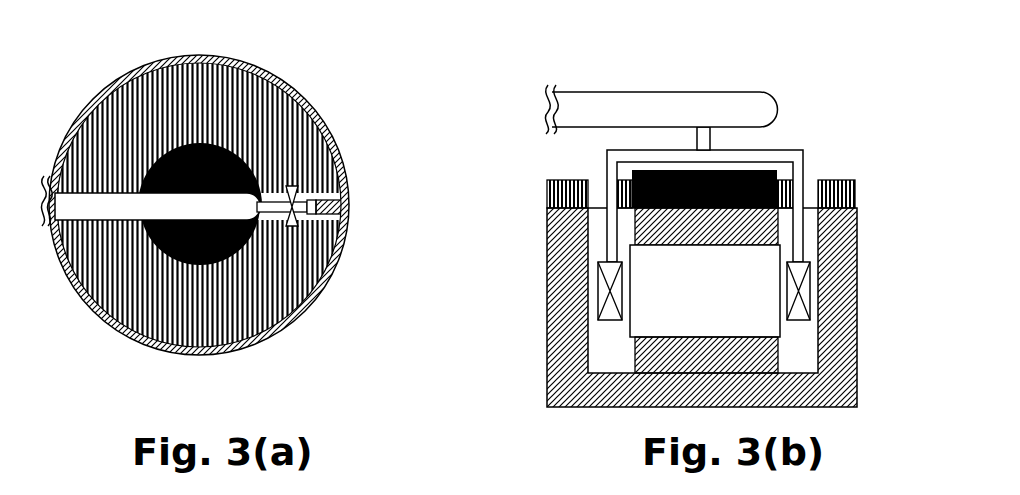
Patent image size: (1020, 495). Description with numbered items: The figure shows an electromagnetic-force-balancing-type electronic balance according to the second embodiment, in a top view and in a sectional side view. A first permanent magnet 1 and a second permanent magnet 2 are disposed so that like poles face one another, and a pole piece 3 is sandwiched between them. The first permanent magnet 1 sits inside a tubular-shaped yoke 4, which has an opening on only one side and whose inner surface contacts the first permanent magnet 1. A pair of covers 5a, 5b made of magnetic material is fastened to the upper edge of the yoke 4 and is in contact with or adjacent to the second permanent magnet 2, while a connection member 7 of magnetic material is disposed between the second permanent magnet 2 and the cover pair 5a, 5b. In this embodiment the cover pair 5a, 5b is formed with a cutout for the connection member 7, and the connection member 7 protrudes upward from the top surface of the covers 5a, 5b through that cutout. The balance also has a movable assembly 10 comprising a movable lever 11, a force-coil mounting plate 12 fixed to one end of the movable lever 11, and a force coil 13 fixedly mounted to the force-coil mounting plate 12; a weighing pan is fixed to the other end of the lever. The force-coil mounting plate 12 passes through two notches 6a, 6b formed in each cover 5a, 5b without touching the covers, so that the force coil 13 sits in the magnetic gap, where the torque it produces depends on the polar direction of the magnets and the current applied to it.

In FIG. 3B, the first permanent magnet 1 is at (852, 346).
In FIG. 3B, the second permanent magnet 2 is at (607, 170).
In FIG. 3B, the pole piece 3 is at (852, 254).
In FIG. 3A, the yoke 4 is at (317, 307).
In FIG. 3B, the yoke 4 is at (547, 374).
In FIG. 3A, the cover 5a is at (330, 124).
In FIG. 3B, the cover 5a is at (830, 180).
In FIG. 3A, the cover 5b is at (350, 250).
In FIG. 3B, the cover 5b is at (816, 194).
In FIG. 3A, the notch 6a is at (355, 188).
In FIG. 3A, the notch 6b is at (352, 218).
In FIG. 3A, the connection member 7 is at (318, 104).
In FIG. 3B, the connection member 7 is at (812, 172).
In FIG. 3B, the movable assembly 10 is at (793, 85).
In FIG. 3A, the movable lever 11 is at (340, 153).
In FIG. 3B, the movable lever 11 is at (577, 121).
In FIG. 3A, the force-coil mounting plate 12 is at (352, 198).
In FIG. 3B, the force-coil mounting plate 12 is at (605, 152).
In FIG. 3B, the force coil 13 is at (547, 318).